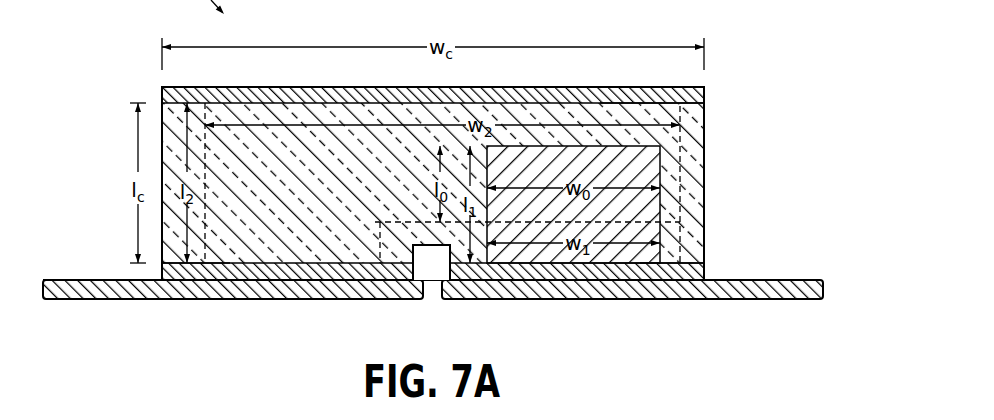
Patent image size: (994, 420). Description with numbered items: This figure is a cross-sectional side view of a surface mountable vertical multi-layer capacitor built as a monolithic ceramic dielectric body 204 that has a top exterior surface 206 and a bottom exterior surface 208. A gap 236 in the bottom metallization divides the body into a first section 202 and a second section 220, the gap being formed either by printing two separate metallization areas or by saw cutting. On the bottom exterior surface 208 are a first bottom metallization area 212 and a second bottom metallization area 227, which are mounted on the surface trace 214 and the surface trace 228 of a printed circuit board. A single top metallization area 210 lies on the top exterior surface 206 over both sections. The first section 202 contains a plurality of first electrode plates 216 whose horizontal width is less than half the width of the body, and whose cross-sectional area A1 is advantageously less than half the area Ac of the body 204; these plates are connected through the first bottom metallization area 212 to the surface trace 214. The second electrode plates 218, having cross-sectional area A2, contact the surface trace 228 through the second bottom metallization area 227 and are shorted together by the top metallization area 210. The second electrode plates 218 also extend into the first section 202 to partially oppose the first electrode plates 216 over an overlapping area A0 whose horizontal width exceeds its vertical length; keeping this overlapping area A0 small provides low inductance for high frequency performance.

The first section 202 is at (758, 124).
The ceramic dielectric body 204 is at (692, 144).
The top exterior surface 206 is at (558, 103).
The bottom exterior surface 208 is at (219, 263).
The top exterior metallization area 210 is at (704, 93).
The first bottom exterior metallization area 212 is at (704, 270).
The surface trace 214 is at (776, 290).
The first electrode plates 216 is at (533, 264).
The second electrode plates 218 is at (386, 299).
The second section 220 is at (108, 152).
The second bottom exterior metallization area 227 is at (269, 285).
The surface trace 228 is at (93, 289).
The gap 236 is at (434, 284).
The overlapping cross-sectional area A0 is at (660, 202).
The cross-sectional area of first electrode plates A1 is at (609, 264).
The cross-sectional area of second electrode plates A2 is at (678, 113).
The area of the capacitor body Ac is at (162, 110).